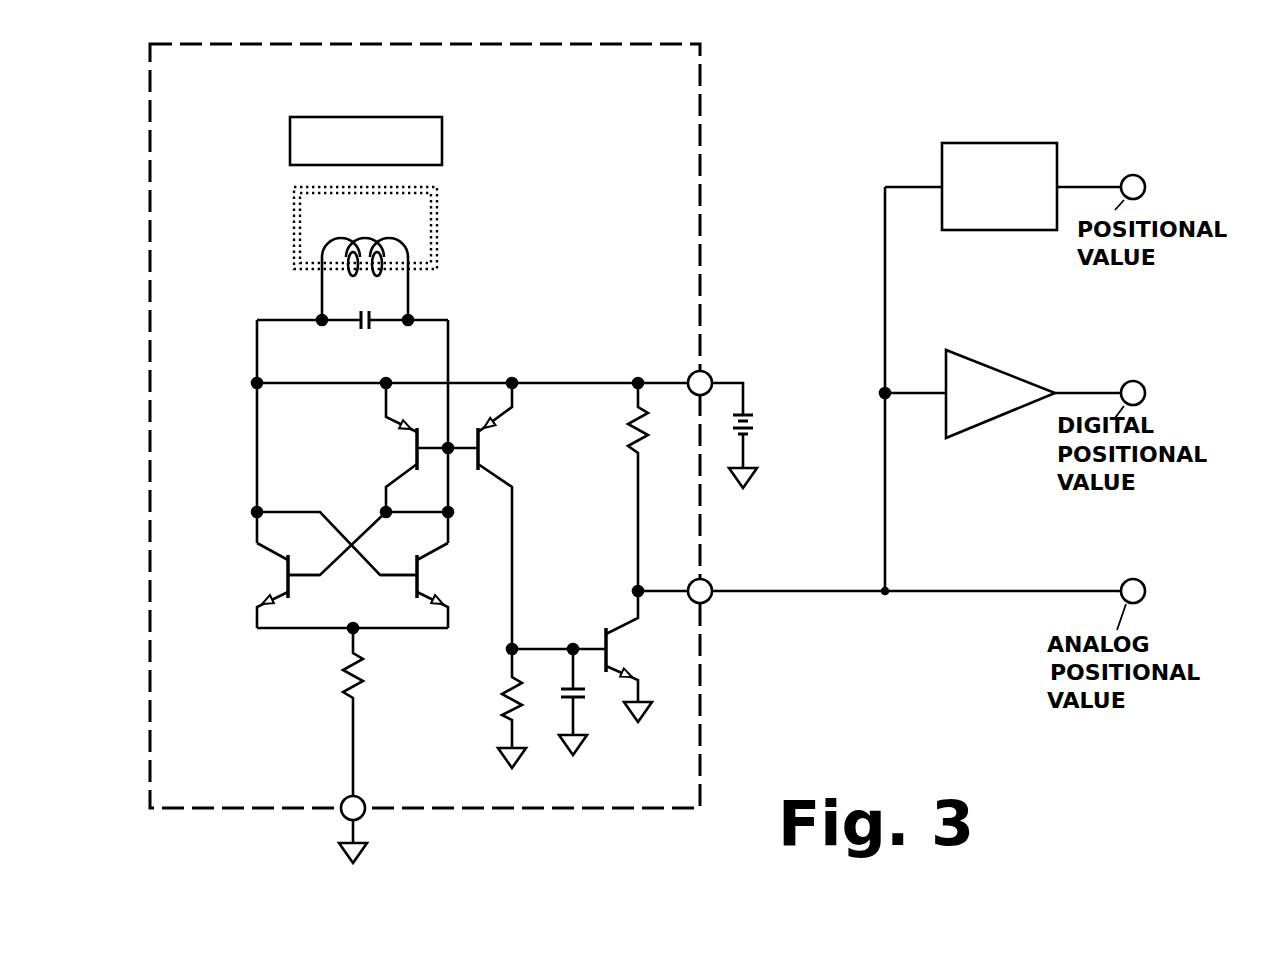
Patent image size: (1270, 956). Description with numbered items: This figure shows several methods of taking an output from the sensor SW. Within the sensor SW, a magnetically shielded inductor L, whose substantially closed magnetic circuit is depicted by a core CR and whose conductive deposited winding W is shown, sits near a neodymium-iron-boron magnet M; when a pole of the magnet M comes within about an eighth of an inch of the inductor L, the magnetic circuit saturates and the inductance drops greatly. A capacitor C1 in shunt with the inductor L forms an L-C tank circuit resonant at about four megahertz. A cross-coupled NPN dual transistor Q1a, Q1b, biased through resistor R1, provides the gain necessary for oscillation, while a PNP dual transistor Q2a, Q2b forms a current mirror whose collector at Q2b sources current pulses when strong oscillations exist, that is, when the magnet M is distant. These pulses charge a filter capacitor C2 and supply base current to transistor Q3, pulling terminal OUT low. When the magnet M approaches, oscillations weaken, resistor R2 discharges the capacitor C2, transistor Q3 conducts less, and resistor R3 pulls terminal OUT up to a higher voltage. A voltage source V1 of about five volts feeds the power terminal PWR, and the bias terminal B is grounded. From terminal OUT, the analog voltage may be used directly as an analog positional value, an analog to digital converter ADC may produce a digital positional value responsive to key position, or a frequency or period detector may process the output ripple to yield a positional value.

The sensor SW is at (655, 240).
The magnet M is at (330, 117).
The core CR is at (294, 196).
The inductor L is at (335, 232).
The winding W is at (322, 248).
The capacitor C1 is at (366, 330).
The cross-coupled NPN dual transistor Q1a is at (275, 590).
The cross-coupled NPN dual transistor Q1b is at (426, 590).
The PNP dual transistor Q2a is at (400, 470).
The PNP dual transistor Q2b is at (497, 470).
The transistor Q3 is at (615, 665).
The resistor R1 is at (338, 672).
The resistor R2 is at (500, 692).
The resistor R3 is at (628, 446).
The filter capacitor C2 is at (582, 698).
The bias terminal B is at (343, 798).
The power terminal PWR is at (711, 374).
The voltage source V1 is at (752, 418).
The terminal OUT is at (710, 580).
The analog to digital converter ADC is at (990, 362).